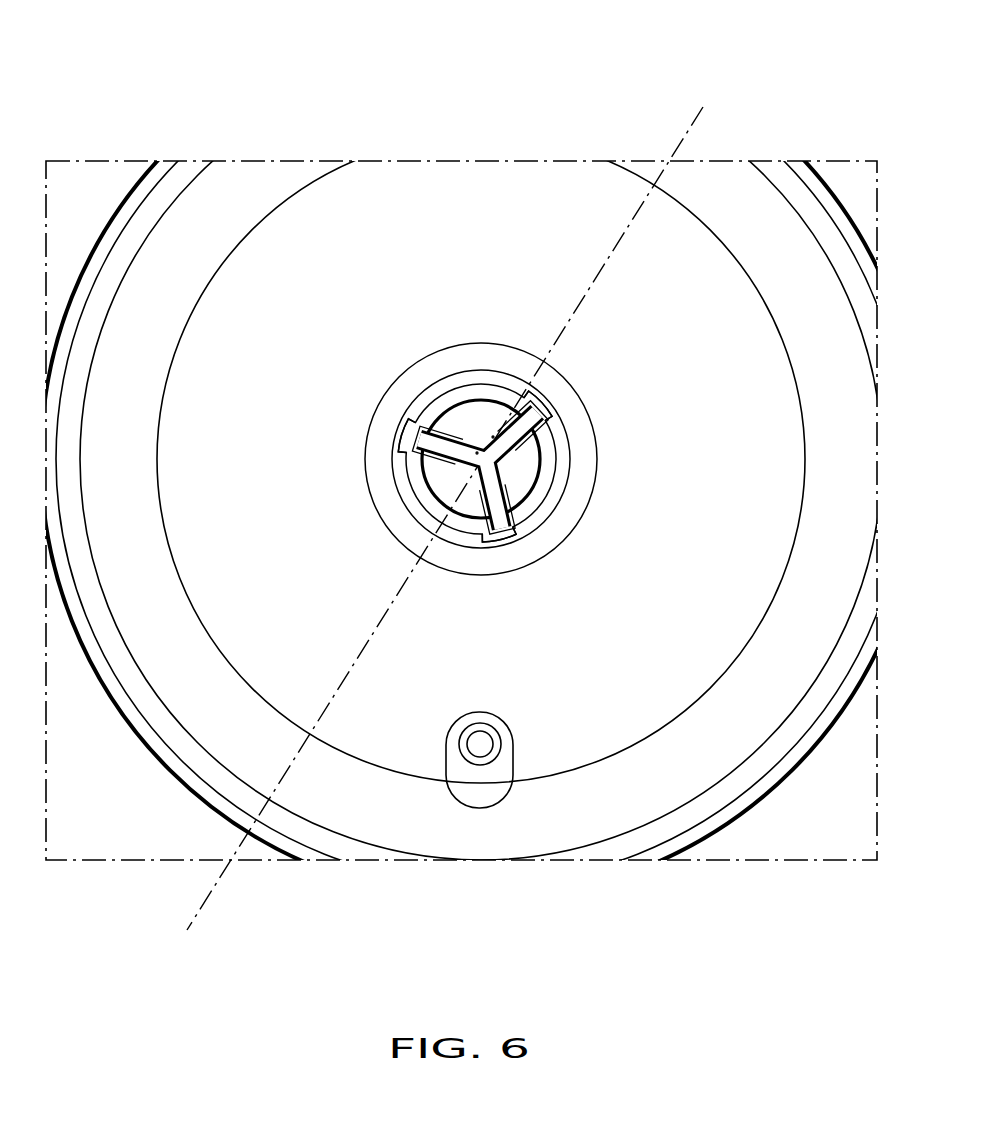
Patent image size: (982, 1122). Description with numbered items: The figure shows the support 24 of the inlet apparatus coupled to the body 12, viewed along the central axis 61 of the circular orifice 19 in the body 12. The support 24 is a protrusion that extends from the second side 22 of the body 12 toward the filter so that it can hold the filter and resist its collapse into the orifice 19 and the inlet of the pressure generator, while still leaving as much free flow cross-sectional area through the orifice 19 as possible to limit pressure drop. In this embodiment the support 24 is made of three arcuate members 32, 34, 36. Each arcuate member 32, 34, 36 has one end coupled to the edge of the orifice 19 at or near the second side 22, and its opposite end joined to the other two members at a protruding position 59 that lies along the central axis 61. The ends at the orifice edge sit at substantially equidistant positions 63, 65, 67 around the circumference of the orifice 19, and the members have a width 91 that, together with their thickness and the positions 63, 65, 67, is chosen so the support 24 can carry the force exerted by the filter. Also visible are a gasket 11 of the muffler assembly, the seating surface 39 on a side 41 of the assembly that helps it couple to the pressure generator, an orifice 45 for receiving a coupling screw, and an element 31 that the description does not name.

The gasket 11 is at (378, 472).
The body 12 is at (148, 769).
The orifice 19 is at (440, 488).
The second side 22 is at (719, 463).
The support 24 is at (550, 484).
The bowl rim 31 is at (800, 742).
The arcuate member 32 is at (487, 497).
The arcuate member 34 is at (522, 468).
The arcuate member 36 is at (450, 428).
The seating surface 39 is at (90, 193).
The side 41 is at (243, 93).
The orifice 45 is at (515, 723).
The protruding position 59 is at (477, 453).
The central axis 61 is at (681, 138).
The position 63 is at (499, 557).
The position 65 is at (560, 392).
The position 67 is at (390, 429).
The width 91 is at (486, 429).